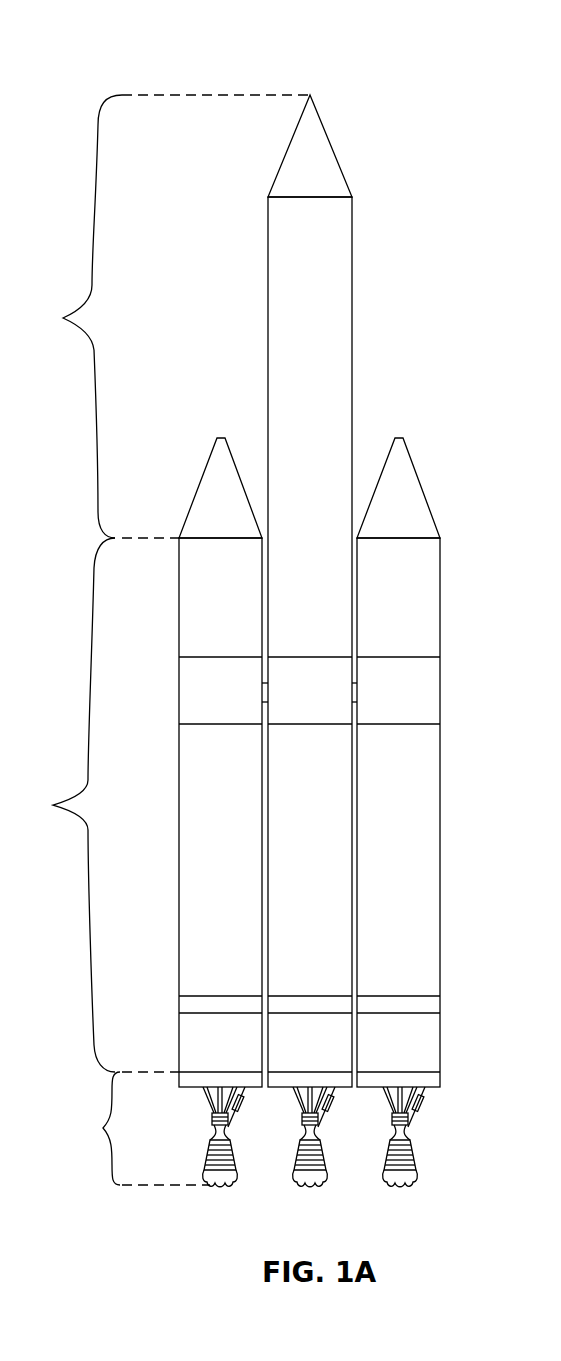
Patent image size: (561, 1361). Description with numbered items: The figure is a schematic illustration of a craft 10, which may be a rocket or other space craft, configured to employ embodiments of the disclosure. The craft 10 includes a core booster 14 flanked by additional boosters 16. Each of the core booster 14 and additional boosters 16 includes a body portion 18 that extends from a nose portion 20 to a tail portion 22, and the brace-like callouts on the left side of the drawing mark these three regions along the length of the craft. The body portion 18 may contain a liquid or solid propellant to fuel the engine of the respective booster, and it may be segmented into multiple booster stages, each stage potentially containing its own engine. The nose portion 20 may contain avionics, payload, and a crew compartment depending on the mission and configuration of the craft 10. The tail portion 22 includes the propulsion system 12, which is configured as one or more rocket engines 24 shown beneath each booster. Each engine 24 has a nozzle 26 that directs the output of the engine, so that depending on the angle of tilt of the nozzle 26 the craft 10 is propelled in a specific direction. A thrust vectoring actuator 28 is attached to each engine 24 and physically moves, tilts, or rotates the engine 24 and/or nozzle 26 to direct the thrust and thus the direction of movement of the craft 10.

The craft 10 is at (426, 44).
The propulsion system 12 is at (448, 1144).
The core booster 14 is at (335, 270).
The additional boosters 16 is at (188, 635).
The body portion 18 is at (102, 805).
The nose portion 20 is at (171, 316).
The tail portion 22 is at (142, 1128).
The engine 24 is at (305, 1126).
The nozzle 26 is at (403, 1173).
The thrust vectoring actuator 28 is at (427, 1098).